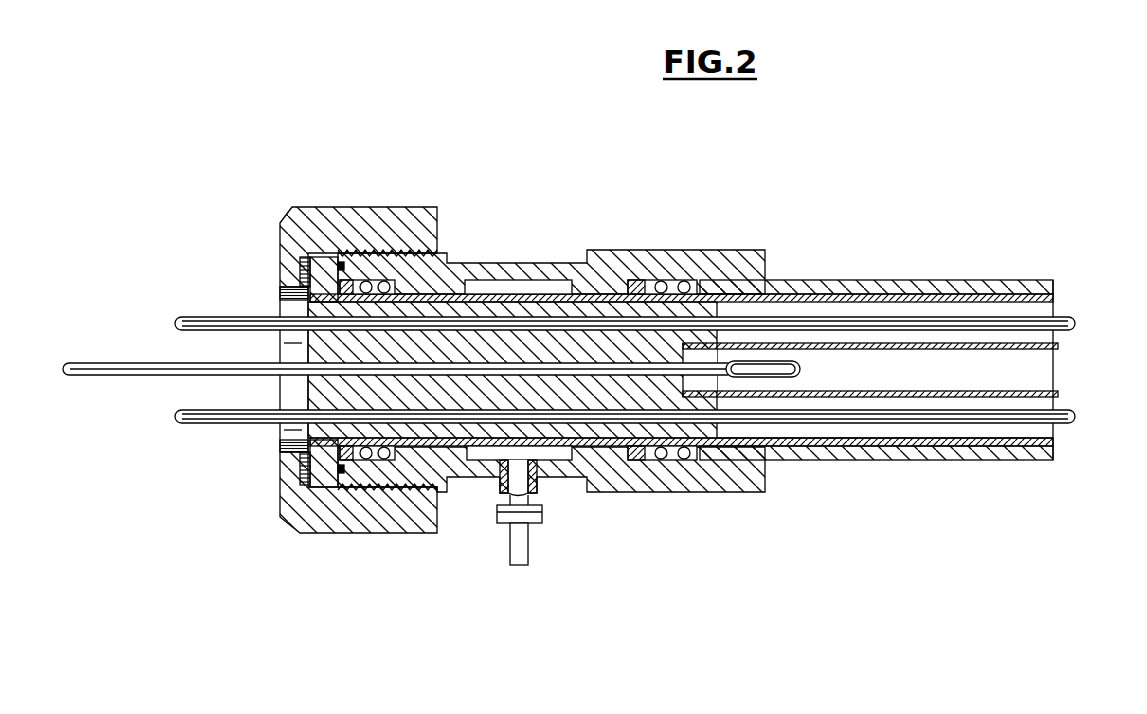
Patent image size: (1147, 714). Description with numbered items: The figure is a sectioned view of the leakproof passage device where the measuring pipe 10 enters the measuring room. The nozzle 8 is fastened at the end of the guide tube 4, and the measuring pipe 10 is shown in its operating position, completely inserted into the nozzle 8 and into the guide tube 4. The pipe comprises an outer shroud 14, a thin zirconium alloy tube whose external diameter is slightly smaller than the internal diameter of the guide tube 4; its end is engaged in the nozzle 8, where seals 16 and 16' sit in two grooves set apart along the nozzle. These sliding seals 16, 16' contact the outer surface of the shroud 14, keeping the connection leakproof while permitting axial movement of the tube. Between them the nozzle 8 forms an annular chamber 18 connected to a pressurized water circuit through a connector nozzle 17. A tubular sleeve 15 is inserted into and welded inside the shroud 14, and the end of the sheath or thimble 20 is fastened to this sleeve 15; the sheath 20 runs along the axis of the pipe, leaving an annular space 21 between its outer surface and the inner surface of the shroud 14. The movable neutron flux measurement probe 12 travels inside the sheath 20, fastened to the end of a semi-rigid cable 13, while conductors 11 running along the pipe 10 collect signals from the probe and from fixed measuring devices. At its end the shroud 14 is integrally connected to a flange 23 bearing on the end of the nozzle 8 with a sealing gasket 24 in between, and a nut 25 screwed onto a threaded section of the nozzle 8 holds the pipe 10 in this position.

The guide tube 4 is at (881, 280).
The nozzle 8 is at (715, 264).
The measuring pipe 10 is at (886, 449).
The conductors 11 is at (205, 317).
The movable neutron flux measurement probe 12 is at (786, 366).
The semi-rigid cable 13 is at (103, 364).
The outer shroud 14 is at (810, 441).
The tubular sleeve 15 is at (487, 398).
The seal 16 is at (402, 307).
The seal 16' is at (647, 320).
The connector nozzle 17 is at (522, 552).
The annular chamber 18 is at (520, 286).
The sheath or thimble 20 is at (1050, 361).
The annular space 21 is at (1023, 432).
The flange 23 is at (320, 467).
The sealing gasket 24 is at (351, 262).
The nut 25 is at (332, 522).